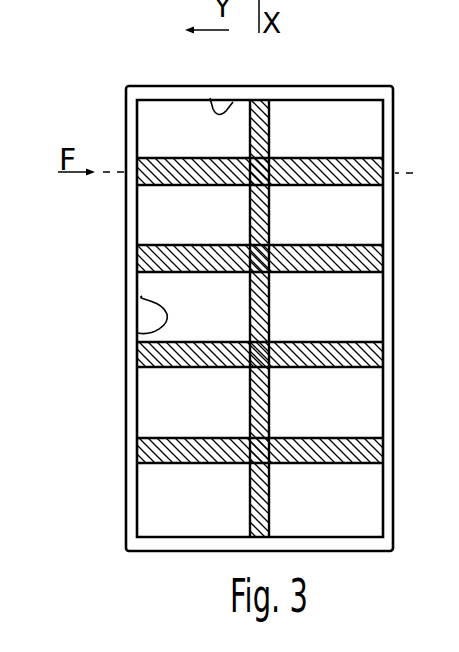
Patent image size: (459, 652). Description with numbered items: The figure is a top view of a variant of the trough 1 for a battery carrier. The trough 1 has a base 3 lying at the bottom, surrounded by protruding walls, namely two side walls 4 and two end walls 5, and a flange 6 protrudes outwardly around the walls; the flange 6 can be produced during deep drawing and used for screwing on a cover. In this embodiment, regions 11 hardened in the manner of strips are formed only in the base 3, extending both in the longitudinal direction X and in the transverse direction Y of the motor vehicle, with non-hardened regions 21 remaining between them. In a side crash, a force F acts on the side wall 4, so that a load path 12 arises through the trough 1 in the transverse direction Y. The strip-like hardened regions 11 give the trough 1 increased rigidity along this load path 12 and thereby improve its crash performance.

The trough 1 is at (119, 258).
The base 3 is at (178, 125).
The side wall 4 is at (168, 331).
The end wall 5 is at (210, 98).
The flange 6 is at (393, 371).
The hardened region 11 is at (274, 134).
The load path 12 is at (108, 164).
The non-hardened region 21 is at (155, 502).